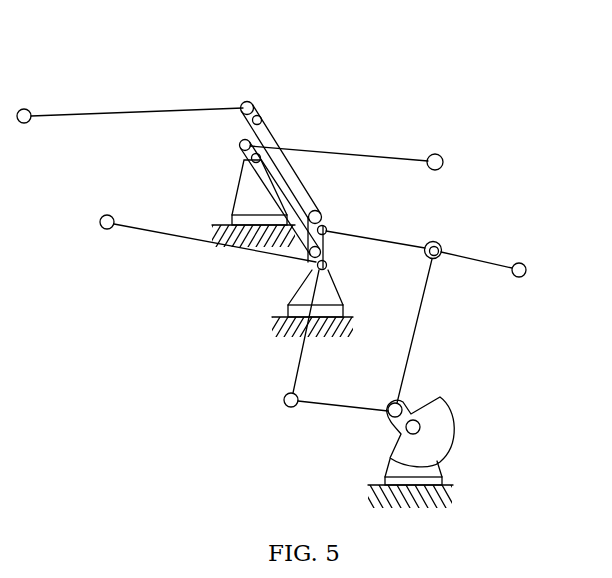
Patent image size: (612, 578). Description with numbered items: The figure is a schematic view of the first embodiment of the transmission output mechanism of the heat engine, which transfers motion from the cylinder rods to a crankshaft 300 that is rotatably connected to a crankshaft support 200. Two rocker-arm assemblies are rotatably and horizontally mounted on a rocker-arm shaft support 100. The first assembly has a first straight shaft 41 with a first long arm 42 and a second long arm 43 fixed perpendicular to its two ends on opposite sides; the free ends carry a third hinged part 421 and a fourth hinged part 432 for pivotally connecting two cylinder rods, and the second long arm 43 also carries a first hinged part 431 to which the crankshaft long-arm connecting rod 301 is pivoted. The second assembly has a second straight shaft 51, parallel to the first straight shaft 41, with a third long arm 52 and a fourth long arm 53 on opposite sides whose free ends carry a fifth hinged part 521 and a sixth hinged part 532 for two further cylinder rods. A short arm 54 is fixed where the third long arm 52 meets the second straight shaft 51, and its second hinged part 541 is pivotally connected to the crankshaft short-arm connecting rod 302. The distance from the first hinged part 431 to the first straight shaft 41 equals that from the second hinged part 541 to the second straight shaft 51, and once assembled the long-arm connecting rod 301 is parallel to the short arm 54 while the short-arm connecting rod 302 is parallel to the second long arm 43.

The rocker-arm shaft support 100 is at (261, 246).
The crankshaft support 200 is at (432, 464).
The crankshaft 300 is at (434, 404).
The crankshaft long-arm connecting rod 301 is at (439, 331).
The crankshaft short-arm connecting rod 302 is at (326, 436).
The first straight shaft 41 is at (297, 185).
The first long arm 42 is at (137, 63).
The third hinged part 421 is at (66, 66).
The second long arm 43 is at (419, 222).
The first hinged part 431 is at (459, 226).
The fourth hinged part 432 is at (544, 243).
The second straight shaft 51 is at (248, 195).
The third long arm 52 is at (204, 265).
The fifth hinged part 521 is at (69, 248).
The fourth long arm 53 is at (339, 107).
The sixth hinged part 532 is at (467, 112).
The short arm 54 is at (273, 331).
The second hinged part 541 is at (258, 415).